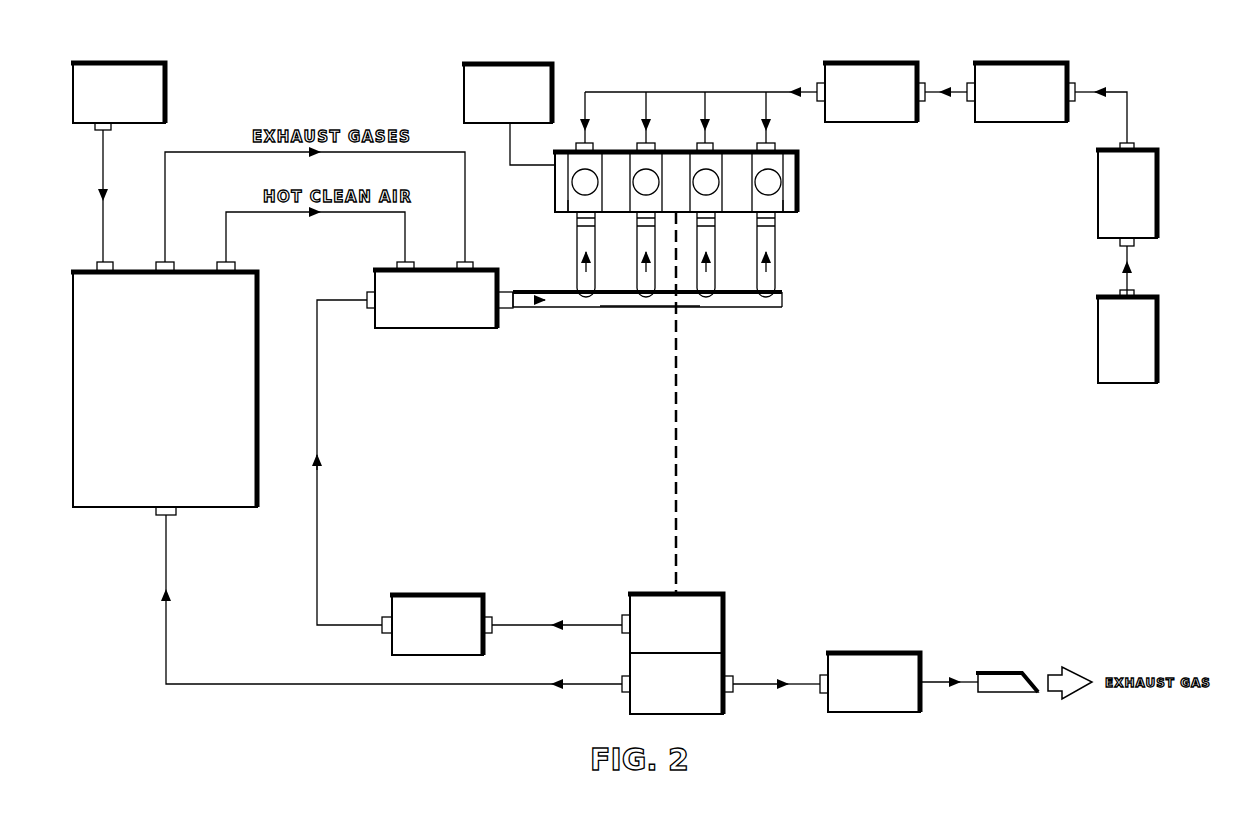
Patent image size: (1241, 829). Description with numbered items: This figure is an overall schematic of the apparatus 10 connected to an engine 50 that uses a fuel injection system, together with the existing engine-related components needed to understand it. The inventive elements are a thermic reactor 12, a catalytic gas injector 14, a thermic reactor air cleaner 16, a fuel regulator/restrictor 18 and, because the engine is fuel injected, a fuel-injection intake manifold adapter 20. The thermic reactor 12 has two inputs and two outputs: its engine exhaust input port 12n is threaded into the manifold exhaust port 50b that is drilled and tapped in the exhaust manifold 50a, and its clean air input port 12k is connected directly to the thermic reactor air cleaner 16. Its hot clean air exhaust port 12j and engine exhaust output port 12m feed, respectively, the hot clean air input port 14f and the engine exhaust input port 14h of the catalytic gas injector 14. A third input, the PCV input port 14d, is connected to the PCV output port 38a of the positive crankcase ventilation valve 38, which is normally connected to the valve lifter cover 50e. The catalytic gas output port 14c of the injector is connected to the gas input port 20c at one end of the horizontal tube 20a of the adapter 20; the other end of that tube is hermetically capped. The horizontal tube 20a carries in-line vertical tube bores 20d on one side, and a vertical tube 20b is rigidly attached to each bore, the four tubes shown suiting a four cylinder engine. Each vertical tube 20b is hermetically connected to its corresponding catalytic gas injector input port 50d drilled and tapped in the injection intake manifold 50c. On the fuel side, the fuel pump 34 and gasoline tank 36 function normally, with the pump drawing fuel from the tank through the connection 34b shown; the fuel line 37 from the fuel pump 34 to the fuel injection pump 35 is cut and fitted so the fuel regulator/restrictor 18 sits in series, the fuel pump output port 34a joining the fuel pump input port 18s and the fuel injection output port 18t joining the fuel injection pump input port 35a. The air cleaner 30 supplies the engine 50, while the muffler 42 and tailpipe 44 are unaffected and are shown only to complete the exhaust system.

The apparatus 10 is at (886, 400).
The thermic reactor 12 is at (278, 370).
The clean air input port 12k is at (100, 262).
The engine exhaust output port 12m is at (176, 268).
The hot clean air exhaust port 12j is at (237, 268).
The engine exhaust input port 12n is at (170, 515).
The catalytic gas injector 14 is at (470, 328).
The hot clean air input port 14f is at (400, 264).
The engine exhaust input port 14h is at (486, 258).
The PCV input port 14d is at (367, 296).
The catalytic gas output port 14c is at (525, 284).
The thermic reactor air cleaner 16 is at (165, 84).
The fuel regulator/restrictor 18 is at (1049, 122).
The fuel pump input port 18s is at (1076, 88).
The fuel injection output port 18t is at (968, 100).
The fuel-injection intake manifold adapter 20 is at (712, 318).
The horizontal tube 20a is at (653, 308).
The vertical tubes 20b is at (775, 240).
The gas input port 20c is at (513, 308).
The vertical tube bores 20d is at (793, 286).
The air cleaner 30 is at (464, 82).
The fuel pump 34 is at (1098, 198).
The fuel pump output port 34a is at (1120, 146).
The sensor unit input 34b is at (1120, 244).
The fuel injection pump 35 is at (899, 122).
The fuel injection pump input port 35a is at (924, 90).
The gasoline tank 36 is at (1098, 348).
The fuel line 37 is at (1127, 130).
The positive crankcase ventilation valve 38 is at (460, 595).
The PCV output port 38a is at (382, 620).
The muffler 42 is at (900, 712).
The tailpipe 44 is at (1012, 692).
The engine 50 is at (798, 164).
The exhaust manifold 50a is at (723, 665).
The manifold exhaust port 50b is at (624, 692).
The injection intake manifold 50c is at (580, 207).
The catalytic gas injector input ports 50d is at (783, 212).
The valve lifter cover 50e is at (723, 613).